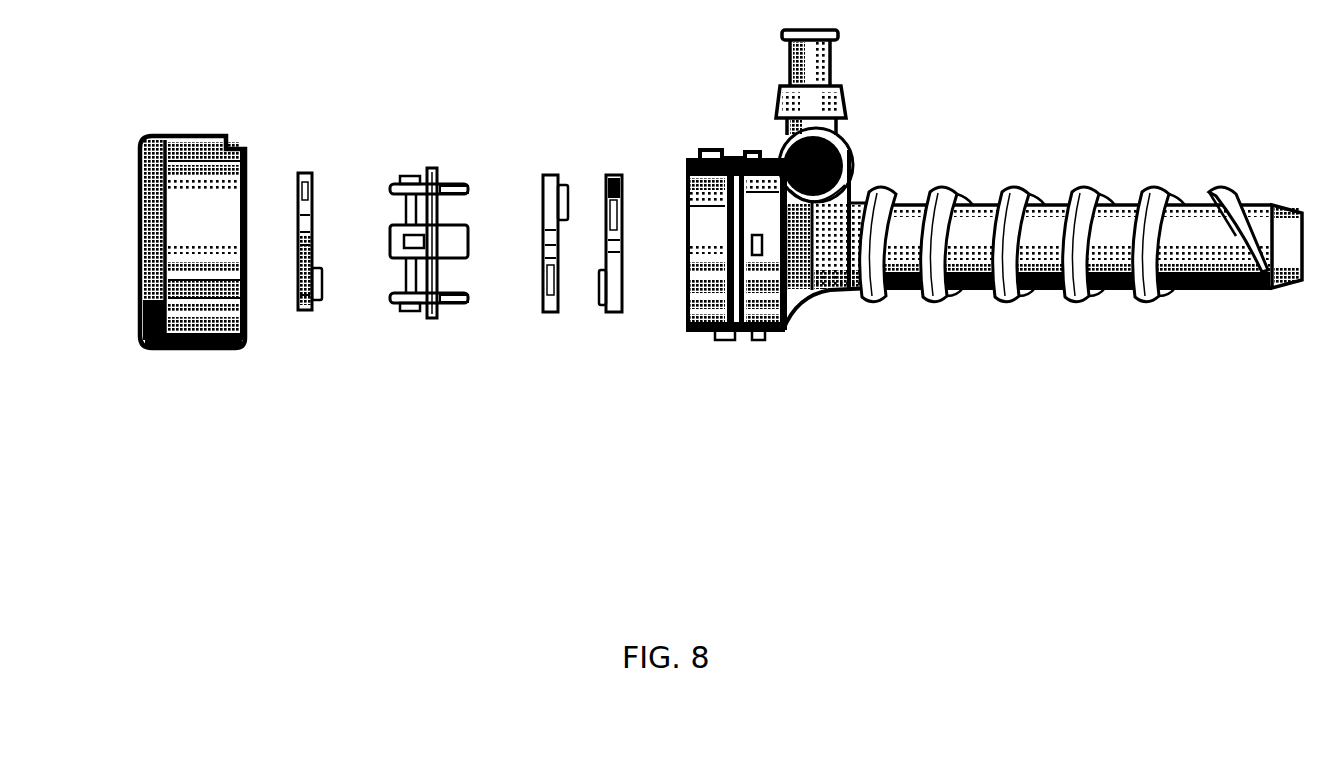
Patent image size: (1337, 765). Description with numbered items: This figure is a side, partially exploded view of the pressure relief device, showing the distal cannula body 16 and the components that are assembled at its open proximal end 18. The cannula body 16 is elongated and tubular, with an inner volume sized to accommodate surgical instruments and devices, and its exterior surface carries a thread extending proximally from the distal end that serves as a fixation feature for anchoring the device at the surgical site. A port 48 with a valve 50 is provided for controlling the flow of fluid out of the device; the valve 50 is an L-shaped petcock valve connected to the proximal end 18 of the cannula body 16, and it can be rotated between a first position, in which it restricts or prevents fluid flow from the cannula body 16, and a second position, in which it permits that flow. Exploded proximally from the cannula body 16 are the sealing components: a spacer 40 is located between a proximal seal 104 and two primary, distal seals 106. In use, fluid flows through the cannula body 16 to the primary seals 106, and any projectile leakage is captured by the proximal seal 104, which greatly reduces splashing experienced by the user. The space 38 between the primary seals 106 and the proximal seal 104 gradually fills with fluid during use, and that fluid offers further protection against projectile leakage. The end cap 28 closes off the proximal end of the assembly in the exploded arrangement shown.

The cannula body 16 is at (1066, 162).
The open proximal end 18 is at (800, 228).
The end cap 28 is at (187, 348).
The space 38 is at (478, 265).
The spacer 40 is at (437, 127).
The port 48 is at (828, 76).
The valve 50 is at (771, 160).
The proximal seal 104 is at (317, 132).
The primary seals 106 is at (606, 136).